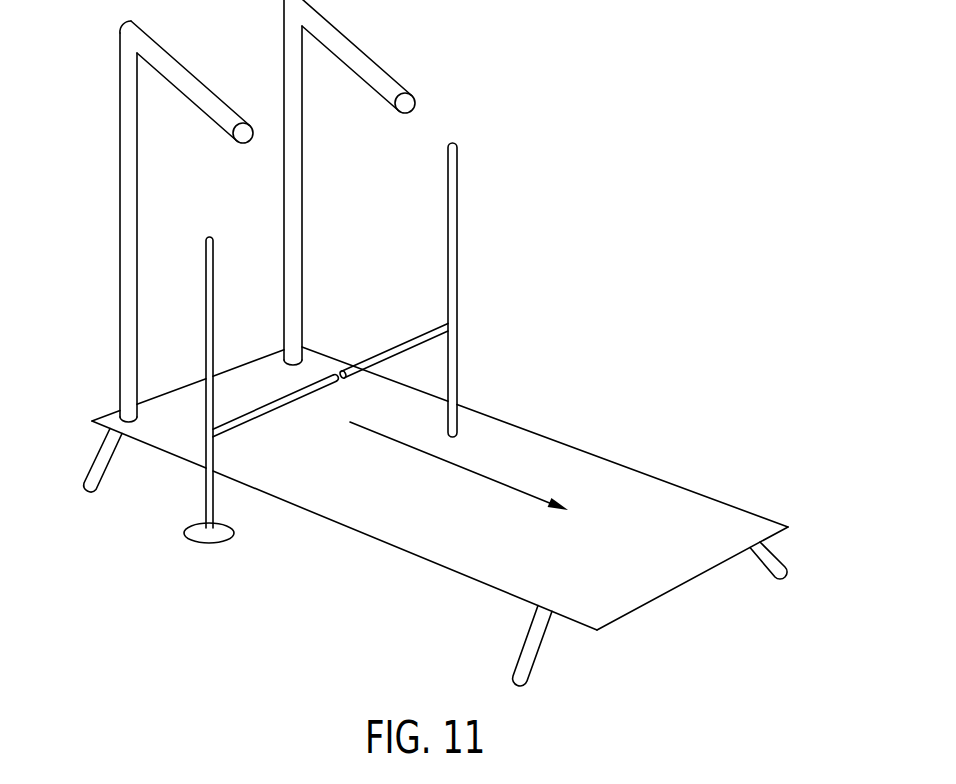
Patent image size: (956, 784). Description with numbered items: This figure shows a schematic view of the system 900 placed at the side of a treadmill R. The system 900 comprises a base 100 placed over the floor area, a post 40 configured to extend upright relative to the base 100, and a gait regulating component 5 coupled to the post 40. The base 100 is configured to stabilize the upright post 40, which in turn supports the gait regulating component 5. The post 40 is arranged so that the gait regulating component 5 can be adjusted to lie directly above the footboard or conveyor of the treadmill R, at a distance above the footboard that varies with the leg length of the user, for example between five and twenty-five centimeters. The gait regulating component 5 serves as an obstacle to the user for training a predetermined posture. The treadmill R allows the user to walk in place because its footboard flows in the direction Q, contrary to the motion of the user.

The system 900 is at (492, 232).
The post 40 is at (453, 367).
The gait regulating component 5 is at (388, 357).
The base 100 is at (195, 552).
The treadmill R is at (619, 381).
The direction of footboard flow Q is at (470, 448).